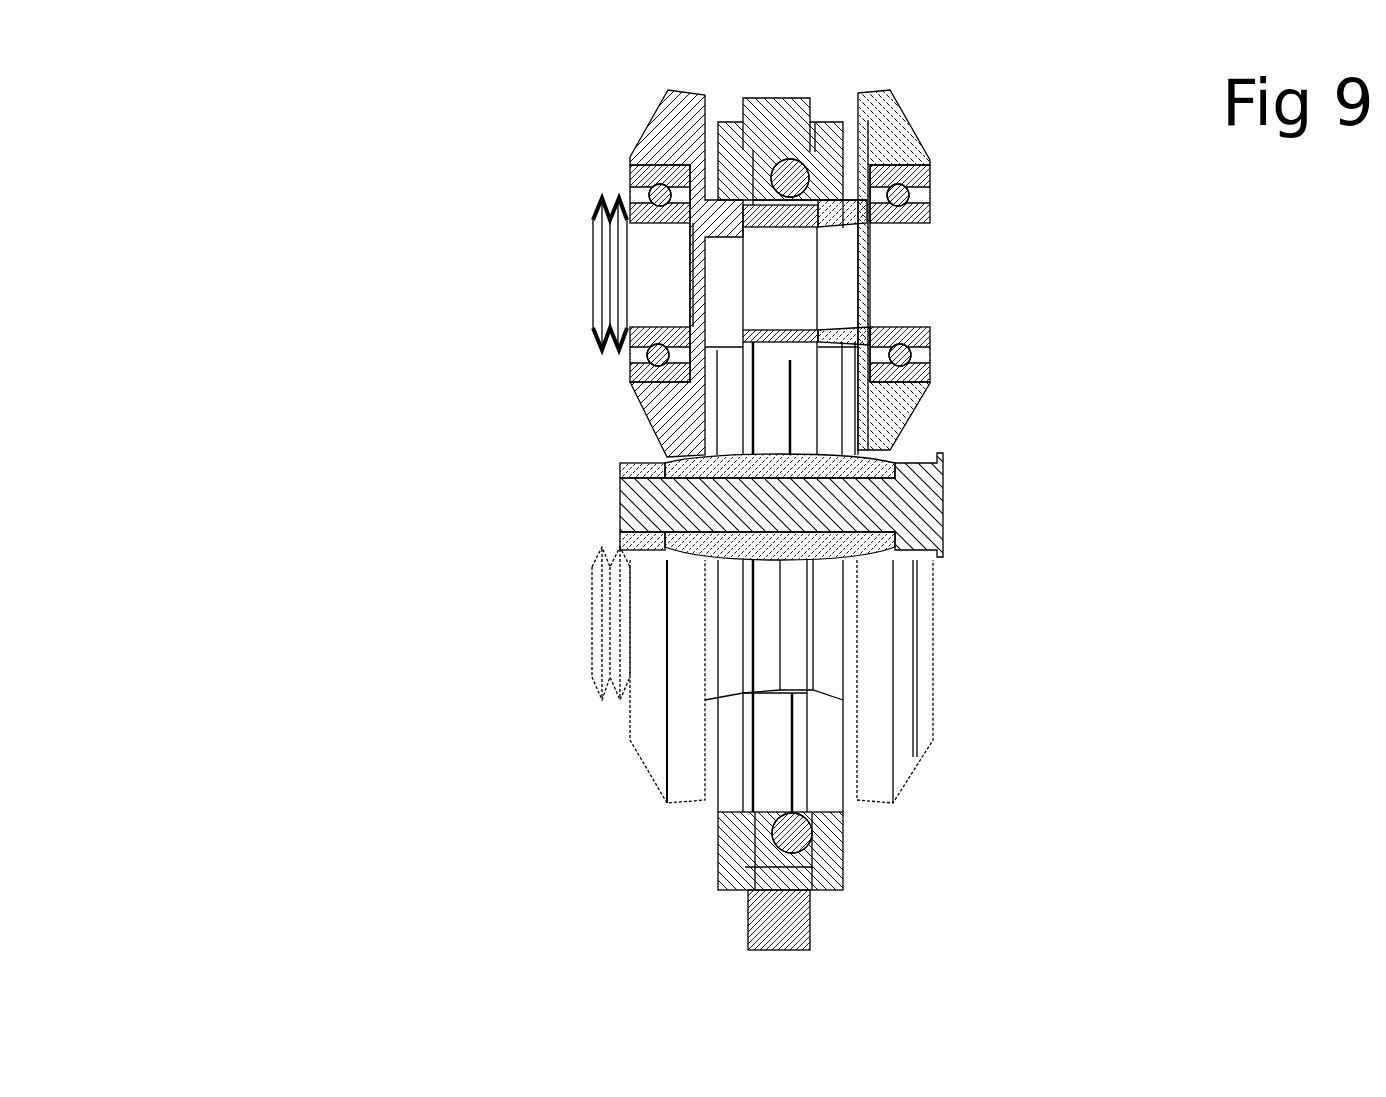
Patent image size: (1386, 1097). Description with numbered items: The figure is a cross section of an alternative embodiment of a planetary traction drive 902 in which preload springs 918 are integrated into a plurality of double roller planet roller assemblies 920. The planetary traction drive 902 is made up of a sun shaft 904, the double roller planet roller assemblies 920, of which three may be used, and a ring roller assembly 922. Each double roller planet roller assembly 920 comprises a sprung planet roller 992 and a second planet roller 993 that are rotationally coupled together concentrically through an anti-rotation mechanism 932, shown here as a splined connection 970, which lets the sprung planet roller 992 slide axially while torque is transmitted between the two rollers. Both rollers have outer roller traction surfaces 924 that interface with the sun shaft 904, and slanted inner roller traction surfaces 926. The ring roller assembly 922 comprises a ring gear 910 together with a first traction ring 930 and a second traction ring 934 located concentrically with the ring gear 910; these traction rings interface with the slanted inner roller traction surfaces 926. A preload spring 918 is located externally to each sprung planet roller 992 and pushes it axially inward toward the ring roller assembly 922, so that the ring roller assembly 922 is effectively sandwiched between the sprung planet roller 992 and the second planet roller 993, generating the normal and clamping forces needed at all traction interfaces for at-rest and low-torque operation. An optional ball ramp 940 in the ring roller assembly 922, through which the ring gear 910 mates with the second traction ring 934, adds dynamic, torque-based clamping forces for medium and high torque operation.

The planetary traction drive 902 is at (316, 224).
The sun shaft 904 is at (637, 498).
The ring gear 910 is at (750, 892).
The preload spring 918 is at (592, 568).
The double roller planet roller assembly 920 is at (885, 403).
The ring roller assembly 922 is at (770, 121).
The outer roller traction surfaces 924 is at (690, 802).
The slanted inner roller traction surfaces 926 is at (833, 347).
The first traction ring 930 is at (745, 869).
The anti-rotation mechanism 932 is at (752, 212).
The second traction ring 934 is at (830, 175).
The ball ramp 940 is at (794, 812).
The splined connection 970 is at (872, 225).
The sprung planet roller 992 is at (712, 218).
The second planet roller 993 is at (870, 348).